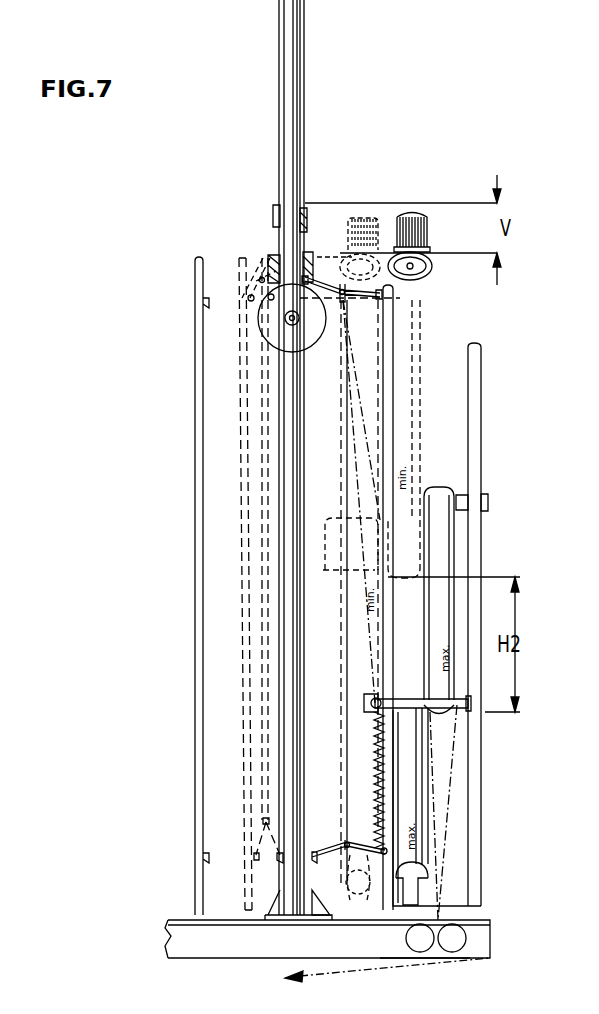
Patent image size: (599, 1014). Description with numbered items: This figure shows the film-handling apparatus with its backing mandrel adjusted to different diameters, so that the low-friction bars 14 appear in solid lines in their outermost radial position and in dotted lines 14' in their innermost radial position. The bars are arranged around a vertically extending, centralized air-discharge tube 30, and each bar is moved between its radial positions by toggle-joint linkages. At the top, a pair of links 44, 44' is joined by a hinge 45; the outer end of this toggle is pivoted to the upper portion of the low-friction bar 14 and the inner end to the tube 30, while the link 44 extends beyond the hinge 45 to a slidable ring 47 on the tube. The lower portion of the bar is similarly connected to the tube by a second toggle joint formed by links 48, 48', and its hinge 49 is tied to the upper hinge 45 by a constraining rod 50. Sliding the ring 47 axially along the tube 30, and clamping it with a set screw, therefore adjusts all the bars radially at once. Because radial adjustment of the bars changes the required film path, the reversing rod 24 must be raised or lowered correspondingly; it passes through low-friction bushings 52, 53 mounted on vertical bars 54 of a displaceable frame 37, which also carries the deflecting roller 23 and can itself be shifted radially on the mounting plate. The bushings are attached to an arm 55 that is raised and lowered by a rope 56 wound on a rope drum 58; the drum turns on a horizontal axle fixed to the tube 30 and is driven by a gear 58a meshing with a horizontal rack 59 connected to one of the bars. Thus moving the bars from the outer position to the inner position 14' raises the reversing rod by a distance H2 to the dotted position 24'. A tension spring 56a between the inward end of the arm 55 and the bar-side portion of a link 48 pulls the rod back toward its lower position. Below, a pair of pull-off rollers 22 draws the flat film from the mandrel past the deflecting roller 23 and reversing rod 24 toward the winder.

The air-discharge tube 30 is at (290, 85).
The low-friction bar 14 is at (298, 586).
The innermost radial position of low-friction bar 14' is at (215, 584).
The pull-off rollers 22 is at (440, 966).
The deflecting roller 23 is at (425, 795).
The reversing rod 24 is at (468, 600).
The raised position of reversing rod 24' is at (421, 439).
The displaceable frame 37 is at (478, 905).
The link 44 is at (367, 265).
The link 44' is at (348, 230).
The hinge 45 is at (340, 289).
The slidable ring 47 is at (276, 262).
The link 48 is at (325, 922).
The link 48' is at (303, 935).
The hinge 49 is at (345, 840).
The constraining rod 50 is at (386, 355).
The low-friction bushing 52 is at (488, 501).
The low-friction bushing 53 is at (470, 713).
The vertical bar 54 is at (481, 440).
The arm 55 is at (425, 720).
The rope 56 is at (372, 673).
The tension spring 56a is at (392, 800).
The rope drum 58 is at (268, 340).
The gear 58a is at (287, 320).
The horizontal rack 59 is at (323, 250).